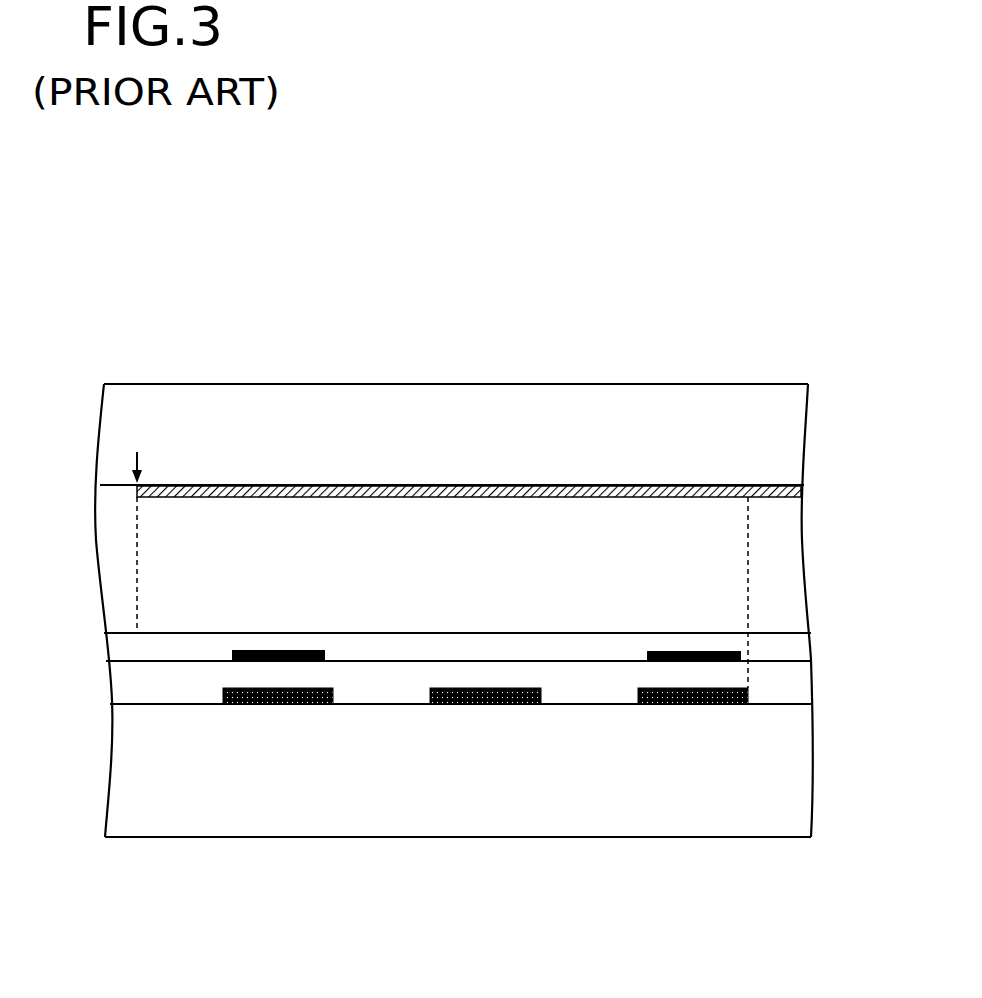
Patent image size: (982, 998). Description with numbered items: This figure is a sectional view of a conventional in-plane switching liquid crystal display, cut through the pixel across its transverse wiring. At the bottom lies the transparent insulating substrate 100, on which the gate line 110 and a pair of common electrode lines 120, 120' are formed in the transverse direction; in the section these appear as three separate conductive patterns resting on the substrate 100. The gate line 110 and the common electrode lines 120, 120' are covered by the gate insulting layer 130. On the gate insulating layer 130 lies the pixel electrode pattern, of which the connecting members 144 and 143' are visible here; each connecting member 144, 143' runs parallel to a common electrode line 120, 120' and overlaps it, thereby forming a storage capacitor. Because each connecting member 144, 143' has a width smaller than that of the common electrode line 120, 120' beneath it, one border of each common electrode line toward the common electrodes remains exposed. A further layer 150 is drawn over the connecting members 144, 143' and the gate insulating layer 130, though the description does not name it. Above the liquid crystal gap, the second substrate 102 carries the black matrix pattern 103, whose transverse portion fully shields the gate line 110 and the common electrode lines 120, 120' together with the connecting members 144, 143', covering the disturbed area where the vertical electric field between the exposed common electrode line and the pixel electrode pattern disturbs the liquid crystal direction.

The transparent insulating substrate 100 is at (798, 775).
The upper substrate 102 is at (343, 407).
The black matrix pattern 103 is at (503, 485).
The gate line 110 is at (482, 705).
The common electrode line 120 is at (283, 799).
The gate electrode 120' is at (719, 799).
The gate insulating layer 130 is at (797, 688).
The electrode layer 143' is at (689, 781).
The connecting member 144 is at (253, 705).
The passivation layer 150 is at (795, 648).